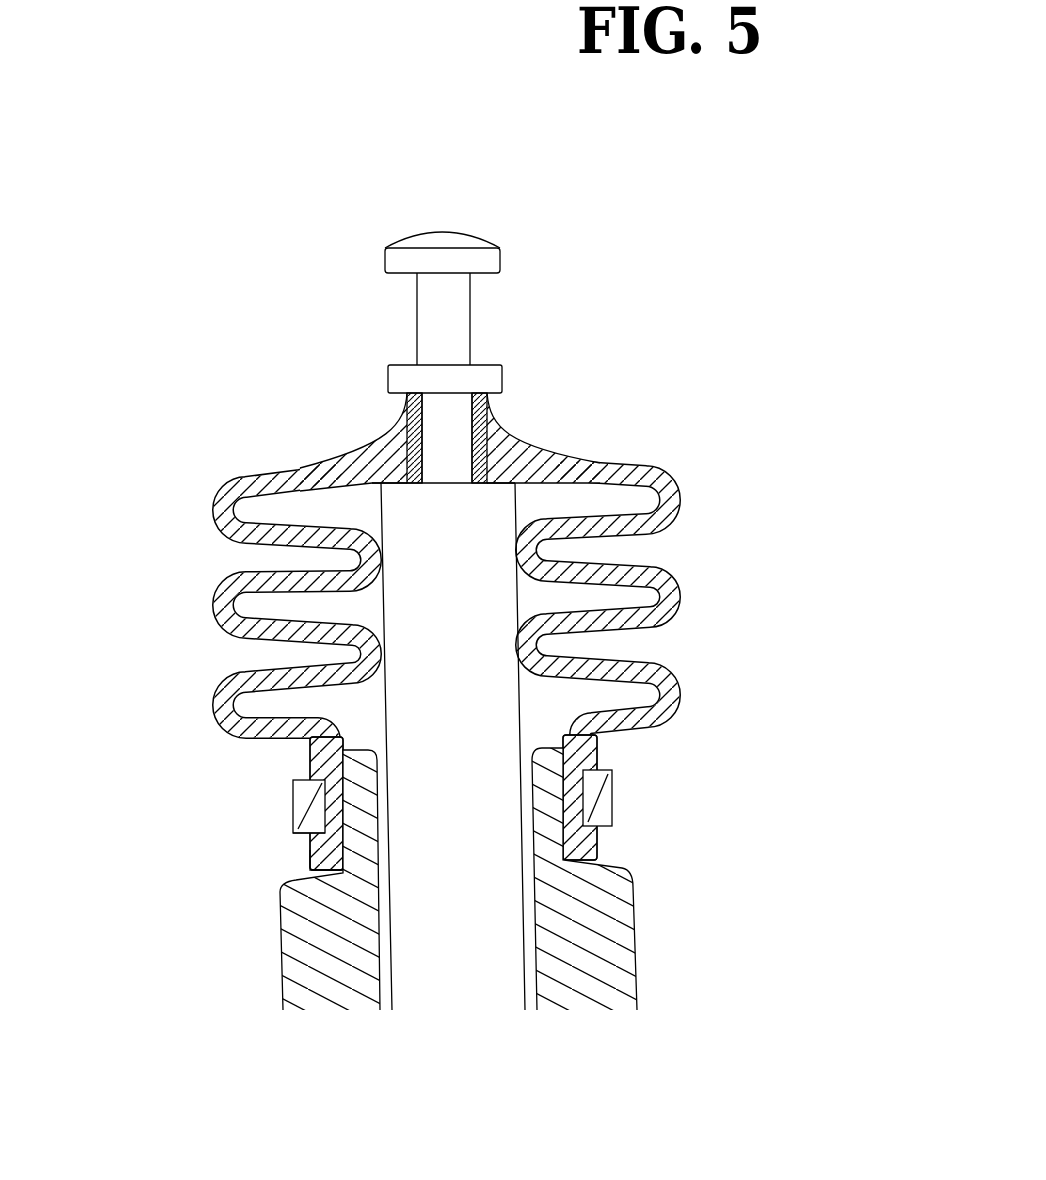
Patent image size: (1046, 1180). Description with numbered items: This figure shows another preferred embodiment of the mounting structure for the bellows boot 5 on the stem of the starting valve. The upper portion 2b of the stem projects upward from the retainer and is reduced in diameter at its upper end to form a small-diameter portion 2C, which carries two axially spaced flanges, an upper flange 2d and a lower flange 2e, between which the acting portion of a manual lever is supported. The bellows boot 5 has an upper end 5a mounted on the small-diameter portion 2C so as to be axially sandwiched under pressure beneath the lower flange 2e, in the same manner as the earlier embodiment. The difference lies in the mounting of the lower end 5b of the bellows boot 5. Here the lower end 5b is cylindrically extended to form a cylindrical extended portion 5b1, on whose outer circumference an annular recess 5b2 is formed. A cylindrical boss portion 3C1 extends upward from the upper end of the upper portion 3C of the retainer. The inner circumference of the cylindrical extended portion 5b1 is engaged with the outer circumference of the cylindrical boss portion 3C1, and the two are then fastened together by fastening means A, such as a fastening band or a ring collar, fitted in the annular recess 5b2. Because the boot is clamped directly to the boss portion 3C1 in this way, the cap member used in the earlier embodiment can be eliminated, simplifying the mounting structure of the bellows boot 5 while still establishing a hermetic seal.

The bellows boot 5 is at (378, 636).
The upper end 5a is at (367, 451).
The lower end 5b is at (342, 830).
The cylindrical extended portion 5b1 is at (312, 848).
The annular recess 5b2 is at (293, 805).
The fastening means A is at (293, 820).
The upper portion 2b is at (480, 700).
The small-diameter portion 2C is at (447, 443).
The upper flange 2d is at (483, 262).
The lower flange 2e is at (488, 382).
The upper portion 3C is at (533, 878).
The cylindrical boss portion 3C1 is at (613, 816).